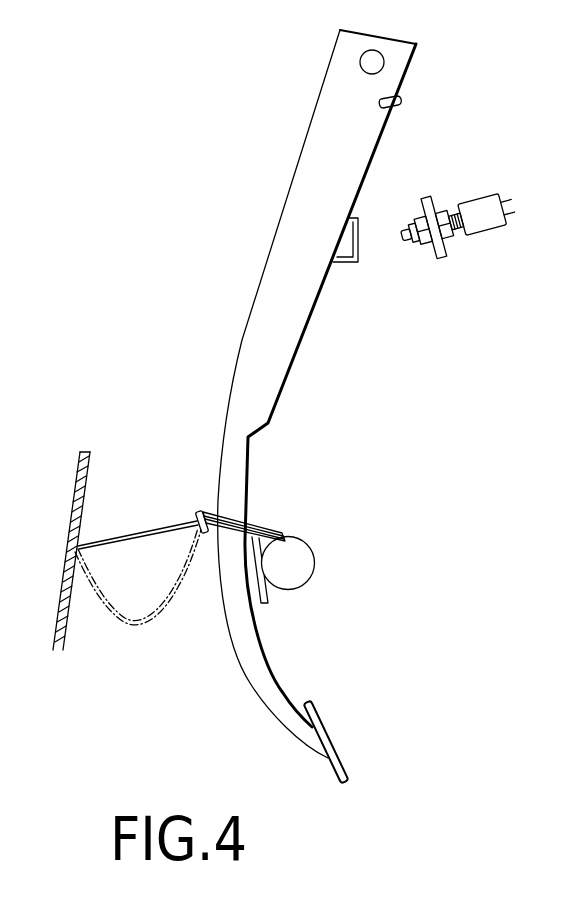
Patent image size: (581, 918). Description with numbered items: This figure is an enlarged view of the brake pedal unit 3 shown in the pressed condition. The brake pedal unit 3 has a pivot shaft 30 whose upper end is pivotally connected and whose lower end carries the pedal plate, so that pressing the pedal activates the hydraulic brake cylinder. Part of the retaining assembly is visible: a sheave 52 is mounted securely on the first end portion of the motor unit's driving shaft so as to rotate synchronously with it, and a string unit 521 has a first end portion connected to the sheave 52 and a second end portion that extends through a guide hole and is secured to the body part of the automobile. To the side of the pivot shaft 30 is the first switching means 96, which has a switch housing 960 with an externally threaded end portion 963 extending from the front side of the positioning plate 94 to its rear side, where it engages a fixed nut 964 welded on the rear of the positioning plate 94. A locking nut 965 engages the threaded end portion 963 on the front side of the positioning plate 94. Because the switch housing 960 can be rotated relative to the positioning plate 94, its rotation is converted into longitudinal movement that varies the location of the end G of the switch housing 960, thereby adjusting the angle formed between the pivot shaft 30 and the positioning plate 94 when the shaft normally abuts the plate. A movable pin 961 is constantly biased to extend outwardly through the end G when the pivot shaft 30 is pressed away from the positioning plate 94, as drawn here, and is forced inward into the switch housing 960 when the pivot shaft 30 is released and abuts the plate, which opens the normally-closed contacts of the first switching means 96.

The brake pedal unit 3 is at (257, 122).
The pivot shaft 30 is at (295, 217).
The sheave 52 is at (295, 567).
The string unit 521 is at (135, 533).
The first switching means 96 is at (527, 178).
The switch housing 960 is at (482, 213).
The movable pin 961 is at (407, 243).
The externally threaded end portion 963 is at (460, 230).
The fixed nut 964 is at (435, 250).
The locking nut 965 is at (438, 217).
The positioning plate 94 is at (427, 200).
The end of the switch housing G is at (410, 225).